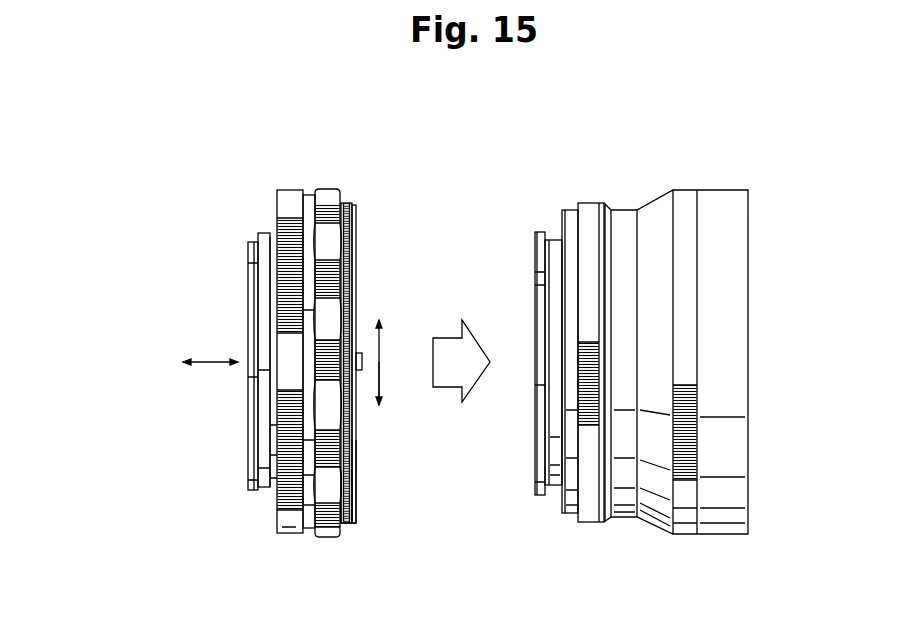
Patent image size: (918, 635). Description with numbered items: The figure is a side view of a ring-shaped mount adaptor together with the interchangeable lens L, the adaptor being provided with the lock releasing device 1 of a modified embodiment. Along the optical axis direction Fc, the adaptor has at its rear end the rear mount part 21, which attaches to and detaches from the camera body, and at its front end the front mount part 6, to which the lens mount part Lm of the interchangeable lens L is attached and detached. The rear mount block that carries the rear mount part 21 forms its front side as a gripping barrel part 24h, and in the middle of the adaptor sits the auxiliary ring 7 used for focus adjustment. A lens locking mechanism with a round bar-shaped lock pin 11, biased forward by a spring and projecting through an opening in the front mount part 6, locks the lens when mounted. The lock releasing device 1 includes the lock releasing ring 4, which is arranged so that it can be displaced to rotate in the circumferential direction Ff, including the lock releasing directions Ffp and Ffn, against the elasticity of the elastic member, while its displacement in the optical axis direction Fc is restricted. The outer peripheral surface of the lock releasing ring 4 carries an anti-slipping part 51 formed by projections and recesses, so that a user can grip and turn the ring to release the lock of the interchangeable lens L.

The lock releasing device 1 is at (362, 218).
The lock releasing ring 4 is at (348, 202).
The front mount part 6 is at (365, 497).
The auxiliary ring 7 is at (330, 538).
The lock pin 11 is at (361, 353).
The rear mount part 21 is at (237, 475).
The gripping barrel part 24h is at (277, 208).
The anti-slipping part 51 is at (360, 487).
The interchangeable lens L is at (635, 182).
The lens mount part Lm is at (520, 242).
The optical axis direction Fc is at (215, 360).
The circumferential direction Ff is at (380, 358).
The lock releasing direction Ffp is at (391, 347).
The lock releasing direction Ffn is at (391, 398).